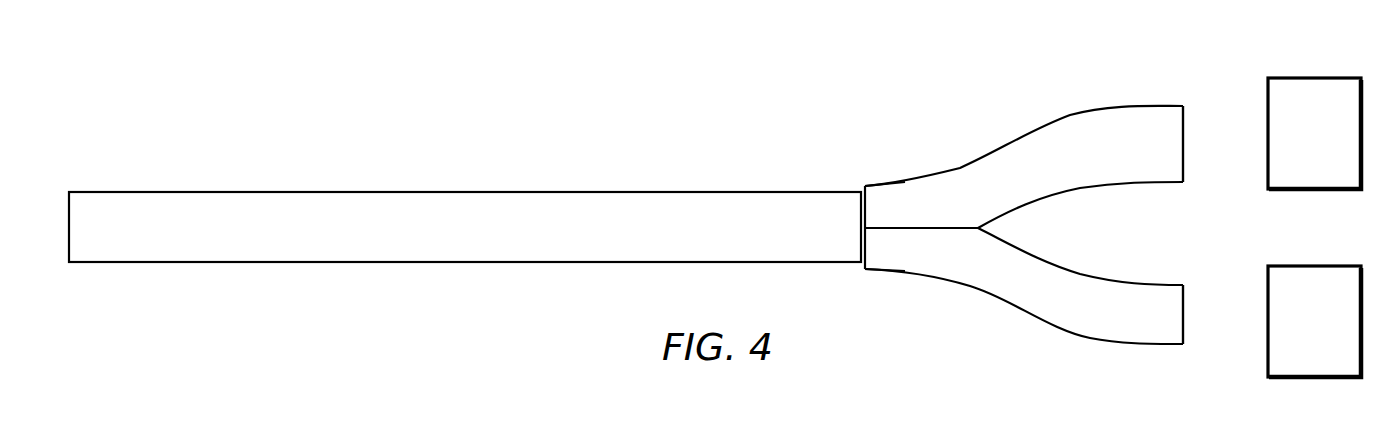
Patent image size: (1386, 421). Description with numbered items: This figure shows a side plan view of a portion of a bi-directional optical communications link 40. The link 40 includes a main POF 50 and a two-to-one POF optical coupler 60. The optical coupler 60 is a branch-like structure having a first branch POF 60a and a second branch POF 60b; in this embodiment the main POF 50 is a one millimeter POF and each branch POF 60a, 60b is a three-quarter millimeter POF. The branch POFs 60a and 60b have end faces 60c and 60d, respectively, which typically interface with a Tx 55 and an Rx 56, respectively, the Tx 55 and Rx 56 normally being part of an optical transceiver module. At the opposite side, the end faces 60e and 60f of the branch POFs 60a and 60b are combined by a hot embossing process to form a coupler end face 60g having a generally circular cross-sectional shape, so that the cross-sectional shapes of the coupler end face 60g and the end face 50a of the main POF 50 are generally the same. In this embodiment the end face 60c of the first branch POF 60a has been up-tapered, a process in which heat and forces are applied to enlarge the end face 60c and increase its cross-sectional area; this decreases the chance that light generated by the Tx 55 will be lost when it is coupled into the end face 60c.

The bi-directional optical communications link 40 is at (322, 94).
The main POF 50 is at (570, 150).
The end face of the main POF 50a is at (866, 203).
The Tx 55 is at (1301, 160).
The Rx 56 is at (1301, 349).
The 2-to-1 POF optical coupler 60 is at (1150, 66).
The first branch POF 60a is at (1045, 131).
The second branch POF 60b is at (1035, 312).
The end face of the first branch POF 60c is at (1184, 130).
The end face of the second branch POF 60d is at (1184, 310).
The end face of the first branch POF 60e is at (867, 188).
The end face of the second branch POF 60f is at (866, 255).
The coupler end face 60g is at (863, 248).